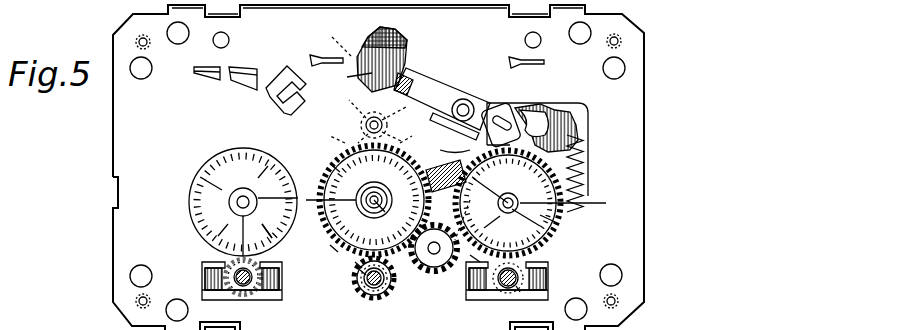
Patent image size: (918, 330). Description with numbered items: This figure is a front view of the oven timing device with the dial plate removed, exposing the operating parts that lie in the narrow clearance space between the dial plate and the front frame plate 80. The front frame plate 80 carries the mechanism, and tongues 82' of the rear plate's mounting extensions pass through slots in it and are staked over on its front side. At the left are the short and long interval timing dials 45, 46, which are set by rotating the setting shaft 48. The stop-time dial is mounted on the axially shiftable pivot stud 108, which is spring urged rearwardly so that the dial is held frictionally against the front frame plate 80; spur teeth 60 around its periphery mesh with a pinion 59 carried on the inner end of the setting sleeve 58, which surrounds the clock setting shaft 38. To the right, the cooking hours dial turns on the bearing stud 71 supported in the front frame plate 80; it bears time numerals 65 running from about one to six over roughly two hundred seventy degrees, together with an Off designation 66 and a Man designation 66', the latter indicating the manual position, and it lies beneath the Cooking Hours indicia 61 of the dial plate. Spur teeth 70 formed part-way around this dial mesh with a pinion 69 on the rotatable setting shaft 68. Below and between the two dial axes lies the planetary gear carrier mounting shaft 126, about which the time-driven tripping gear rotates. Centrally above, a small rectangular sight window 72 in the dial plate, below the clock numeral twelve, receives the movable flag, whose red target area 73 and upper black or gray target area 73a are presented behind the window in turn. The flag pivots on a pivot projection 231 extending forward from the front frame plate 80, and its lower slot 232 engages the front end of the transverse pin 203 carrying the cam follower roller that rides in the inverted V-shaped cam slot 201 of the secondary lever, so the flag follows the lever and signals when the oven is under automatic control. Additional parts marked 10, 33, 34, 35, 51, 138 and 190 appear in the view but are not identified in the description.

The timer dial 10 is at (310, 205).
The star wheel 33 is at (377, 119).
The star wheel arm 34 is at (331, 130).
The star wheel arm 35 is at (410, 130).
The clock setting shaft 38 is at (366, 278).
The short interval timing dial 45 is at (278, 238).
The long interval timing dial 46 is at (194, 220).
The setting shaft 48 is at (245, 285).
The dial pointer 51 is at (338, 252).
The setting sleeve 58 is at (374, 290).
The pinion 59 is at (370, 285).
The spur teeth 60 is at (355, 262).
The Cooking Hours designation 61 is at (470, 150).
The time numerals 65 is at (456, 170).
The Off designation 66 is at (457, 244).
The Man designation 66' is at (571, 231).
The rotatable setting shaft 68 is at (505, 288).
The pinion 69 is at (516, 288).
The spur teeth 70 is at (470, 262).
The bearing stud 71 is at (414, 54).
The rectangular sight window 72 is at (329, 42).
The red target area 73 is at (404, 30).
The upper black or gray target area 73a is at (348, 76).
The front frame plate 80 is at (128, 137).
The tongues 82' is at (405, 75).
The pivot stud 108 is at (332, 164).
The planetary gear carrier mounting shaft 126 is at (430, 268).
The gear shaft 138 is at (432, 270).
The return spring 190 is at (582, 150).
The cam slot 201 is at (560, 102).
The transverse pin 203 is at (545, 103).
The pivot projection 231 is at (466, 99).
The longitudinally extending slot 232 is at (500, 105).